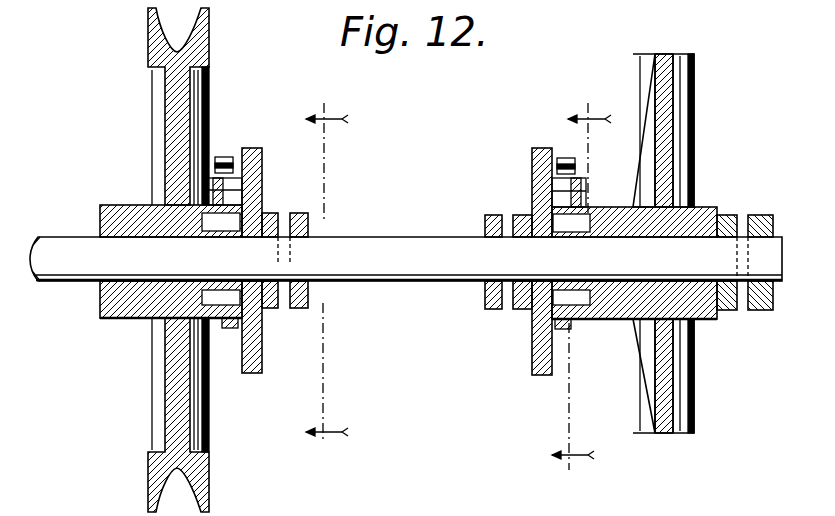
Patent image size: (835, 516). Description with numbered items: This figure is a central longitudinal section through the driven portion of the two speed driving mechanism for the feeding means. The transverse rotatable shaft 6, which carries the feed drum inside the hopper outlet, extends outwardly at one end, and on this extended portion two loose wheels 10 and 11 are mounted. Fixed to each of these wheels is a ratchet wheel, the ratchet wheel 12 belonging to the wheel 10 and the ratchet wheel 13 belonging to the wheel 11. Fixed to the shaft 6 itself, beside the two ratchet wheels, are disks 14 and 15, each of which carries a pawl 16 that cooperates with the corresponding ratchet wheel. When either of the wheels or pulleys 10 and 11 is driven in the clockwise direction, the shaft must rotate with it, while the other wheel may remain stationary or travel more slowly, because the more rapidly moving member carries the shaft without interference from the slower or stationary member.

The shaft 6 is at (388, 239).
The loose wheel 10 is at (207, 72).
The loose wheel 11 is at (688, 118).
The ratchet wheel 12 is at (233, 329).
The ratchet wheel 13 is at (576, 345).
The disk 14 is at (262, 202).
The disk 15 is at (537, 148).
The pawl 16 is at (248, 178).